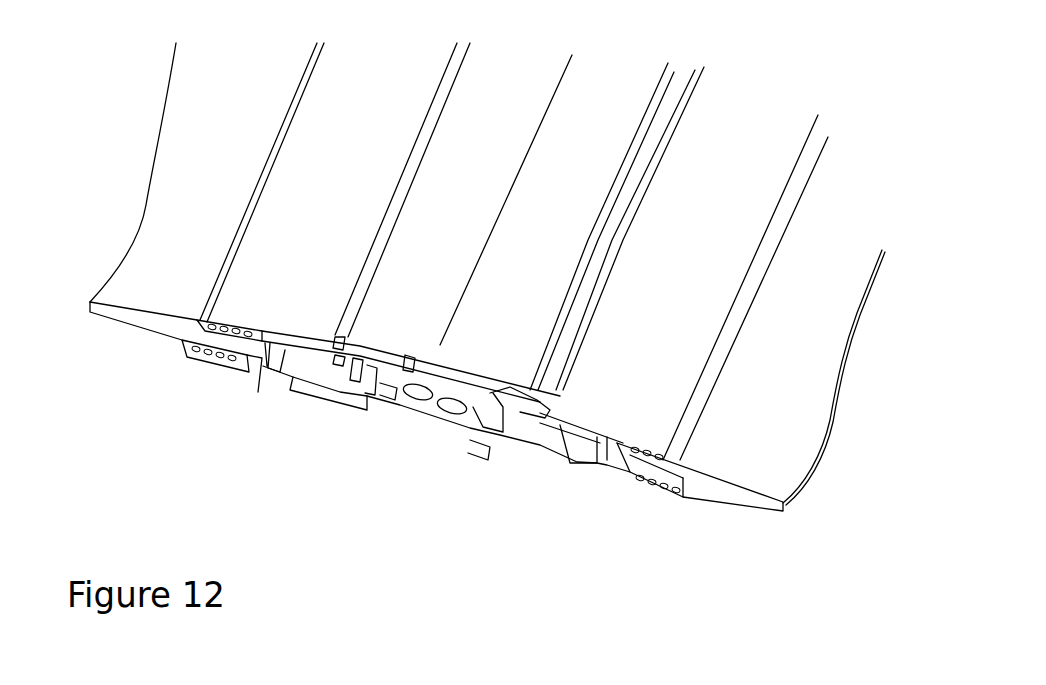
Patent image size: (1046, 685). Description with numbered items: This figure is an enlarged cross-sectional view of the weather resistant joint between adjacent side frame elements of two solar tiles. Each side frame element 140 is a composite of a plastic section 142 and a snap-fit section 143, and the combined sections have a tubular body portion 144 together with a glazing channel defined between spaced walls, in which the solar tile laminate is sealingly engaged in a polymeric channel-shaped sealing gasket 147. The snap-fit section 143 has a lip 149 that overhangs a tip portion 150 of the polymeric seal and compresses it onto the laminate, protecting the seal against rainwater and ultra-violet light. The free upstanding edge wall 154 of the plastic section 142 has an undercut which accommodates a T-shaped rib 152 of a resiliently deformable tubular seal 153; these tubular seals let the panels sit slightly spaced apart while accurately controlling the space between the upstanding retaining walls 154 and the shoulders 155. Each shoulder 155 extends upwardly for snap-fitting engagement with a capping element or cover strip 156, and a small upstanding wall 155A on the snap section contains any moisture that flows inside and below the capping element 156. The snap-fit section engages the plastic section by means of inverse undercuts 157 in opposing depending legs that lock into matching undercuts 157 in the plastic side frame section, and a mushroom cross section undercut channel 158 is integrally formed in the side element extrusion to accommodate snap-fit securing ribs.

The side frame element 140 is at (345, 397).
The section 142 is at (273, 387).
The snap-fit section 143 is at (647, 317).
The tubular body portion 144 is at (342, 413).
The channel-shaped sealing gasket 147 is at (262, 338).
The lip 149 is at (682, 388).
The tip portion 150 is at (180, 316).
The T-shaped rib 152 is at (403, 383).
The tubular seal 153 is at (450, 393).
The free upstanding edge wall 154 is at (473, 430).
The shoulder 155 is at (520, 388).
The upstanding wall 155A is at (473, 432).
The capping element 156 is at (627, 440).
The inverse undercuts 157 is at (312, 383).
The undercut channel 158 is at (540, 453).